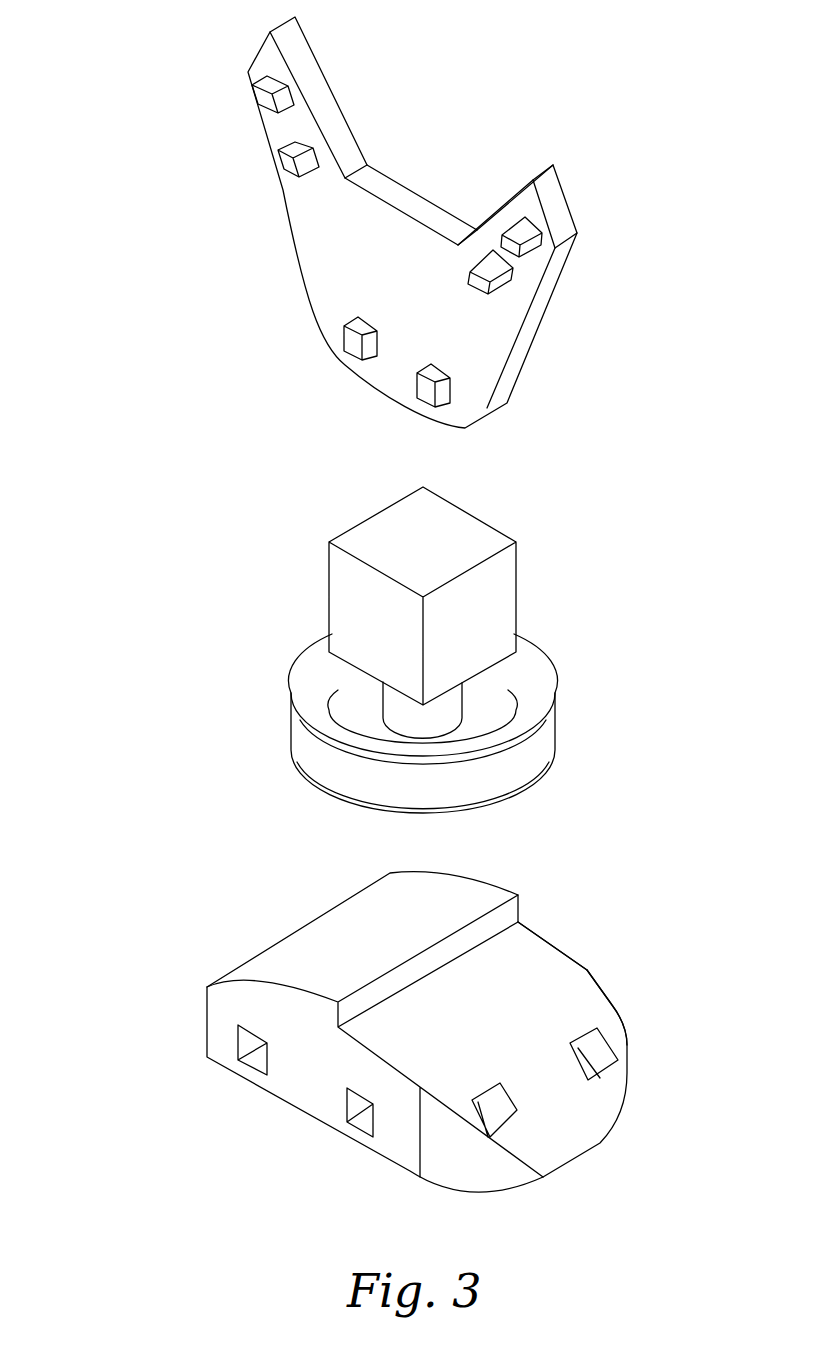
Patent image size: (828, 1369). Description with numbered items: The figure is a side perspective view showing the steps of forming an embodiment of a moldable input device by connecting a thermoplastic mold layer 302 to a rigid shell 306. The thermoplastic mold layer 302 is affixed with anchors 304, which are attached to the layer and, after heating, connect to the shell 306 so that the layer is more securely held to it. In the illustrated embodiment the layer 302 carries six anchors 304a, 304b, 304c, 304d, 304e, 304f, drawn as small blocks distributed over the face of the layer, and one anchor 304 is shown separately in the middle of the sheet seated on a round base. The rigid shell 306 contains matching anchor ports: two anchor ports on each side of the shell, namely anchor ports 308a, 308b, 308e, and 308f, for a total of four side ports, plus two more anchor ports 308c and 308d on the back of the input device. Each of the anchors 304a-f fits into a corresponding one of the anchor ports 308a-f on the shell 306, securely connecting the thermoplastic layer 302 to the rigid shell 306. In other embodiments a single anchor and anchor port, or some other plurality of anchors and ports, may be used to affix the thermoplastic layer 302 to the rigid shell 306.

The thermoplastic mold layer 302 is at (114, 139).
The anchor 304 is at (250, 591).
The anchor 304a is at (258, 98).
The anchor 304b is at (280, 170).
The anchor 304c is at (345, 345).
The anchor 304d is at (422, 388).
The anchor 304e is at (490, 283).
The anchor 304f is at (522, 250).
The rigid shell 306 is at (178, 937).
The anchor port 308a is at (570, 947).
The anchor port 308b is at (610, 988).
The anchor port 308c is at (603, 1048).
The anchor port 308d is at (500, 1113).
The anchor port 308e is at (363, 1123).
The anchor port 308f is at (255, 1060).